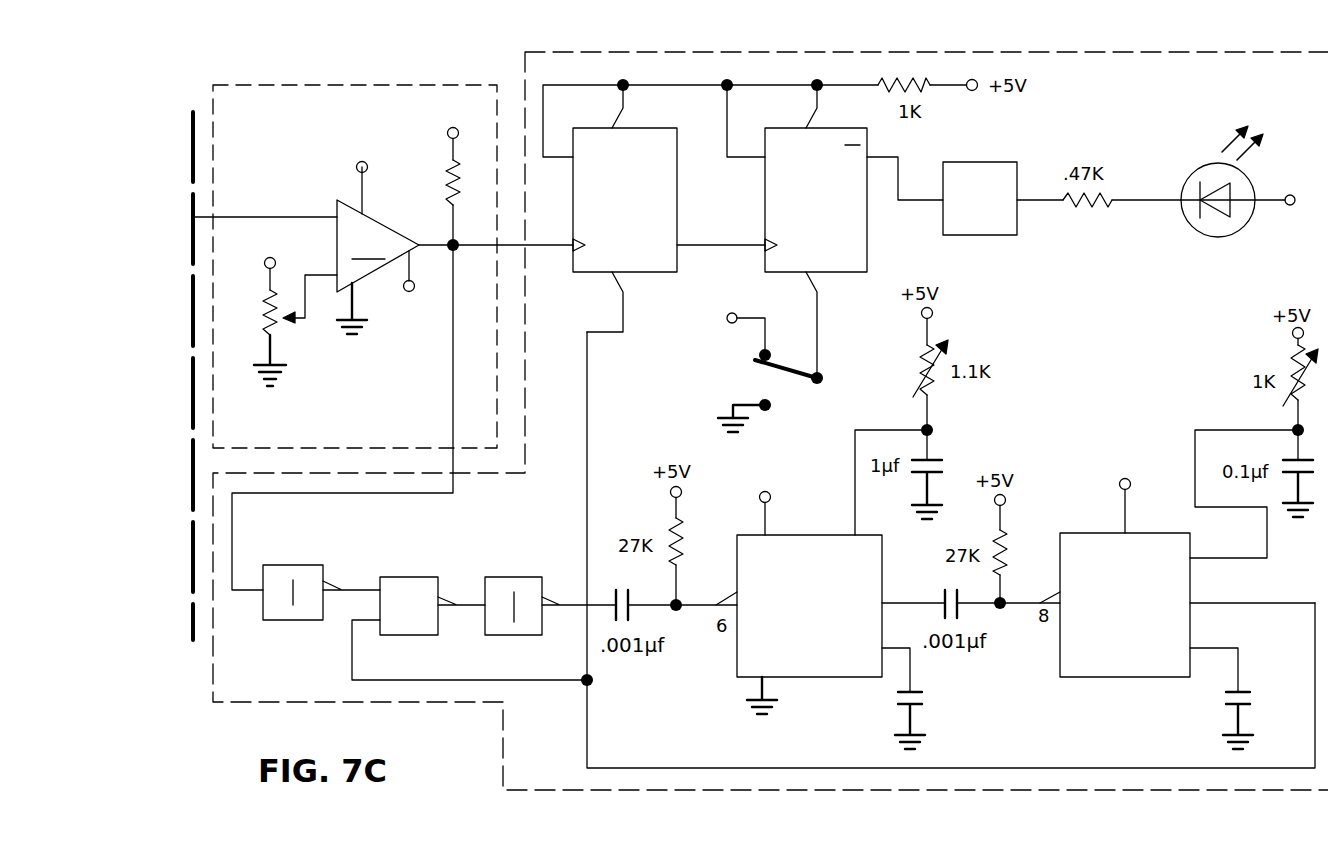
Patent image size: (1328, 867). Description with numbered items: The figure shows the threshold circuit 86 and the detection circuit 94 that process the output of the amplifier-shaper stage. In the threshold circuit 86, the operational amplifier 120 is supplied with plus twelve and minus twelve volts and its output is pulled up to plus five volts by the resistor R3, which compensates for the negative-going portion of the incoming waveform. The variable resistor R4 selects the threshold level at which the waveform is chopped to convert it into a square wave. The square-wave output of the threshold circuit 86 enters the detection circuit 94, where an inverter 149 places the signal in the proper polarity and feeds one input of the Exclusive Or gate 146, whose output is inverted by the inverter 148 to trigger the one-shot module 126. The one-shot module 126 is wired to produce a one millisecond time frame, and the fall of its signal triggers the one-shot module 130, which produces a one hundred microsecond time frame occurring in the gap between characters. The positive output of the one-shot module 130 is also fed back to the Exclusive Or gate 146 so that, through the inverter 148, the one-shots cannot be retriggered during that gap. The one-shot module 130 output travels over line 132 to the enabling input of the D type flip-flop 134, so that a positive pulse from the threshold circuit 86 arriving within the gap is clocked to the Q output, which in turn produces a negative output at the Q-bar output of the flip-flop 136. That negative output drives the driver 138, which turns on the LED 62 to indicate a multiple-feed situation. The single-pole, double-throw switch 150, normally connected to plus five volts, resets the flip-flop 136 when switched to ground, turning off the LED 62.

The threshold circuit 86 is at (346, 86).
The detection circuit 94 is at (523, 74).
The operational amplifier 120 is at (428, 235).
The resistor R3 is at (446, 170).
The variable resistor R4 is at (289, 336).
The D type flip-flop 134 is at (593, 273).
The flip-flop 136 is at (868, 245).
The driver 138 is at (999, 168).
The LED 62 is at (1197, 165).
The single-pole, double-throw switch 150 is at (770, 366).
The inverter 149 is at (270, 565).
The Exclusive Or gate 146 is at (382, 577).
The inverter 148 is at (529, 577).
The one-shot module 126 is at (740, 660).
The one-shot module 130 is at (1115, 677).
The line 132 is at (588, 740).